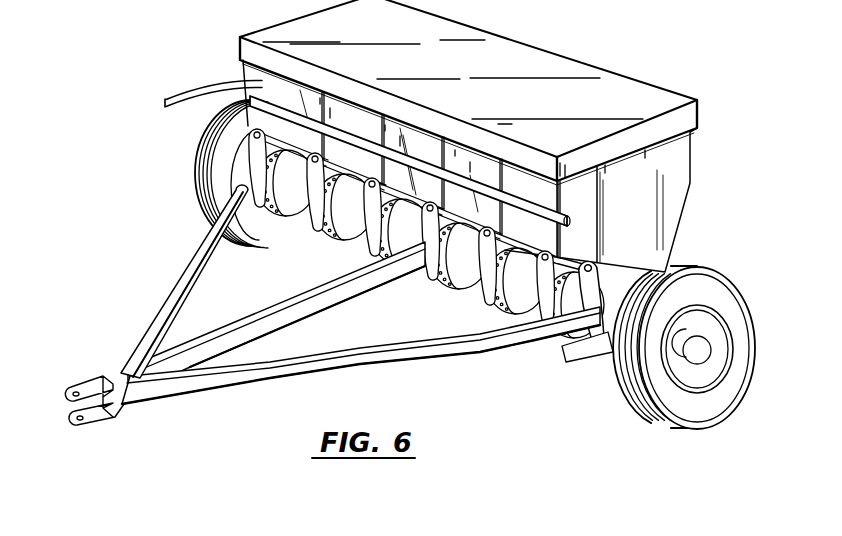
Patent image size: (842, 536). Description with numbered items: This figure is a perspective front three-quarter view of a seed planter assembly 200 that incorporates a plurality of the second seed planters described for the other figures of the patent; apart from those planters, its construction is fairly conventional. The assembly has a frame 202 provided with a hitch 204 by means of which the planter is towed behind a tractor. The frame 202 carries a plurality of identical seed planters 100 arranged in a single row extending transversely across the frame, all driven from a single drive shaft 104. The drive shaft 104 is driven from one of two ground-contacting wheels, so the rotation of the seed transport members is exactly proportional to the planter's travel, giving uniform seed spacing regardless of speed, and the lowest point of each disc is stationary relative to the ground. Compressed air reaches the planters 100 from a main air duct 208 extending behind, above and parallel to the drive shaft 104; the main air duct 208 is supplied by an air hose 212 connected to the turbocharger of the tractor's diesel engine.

The seed planter 100 is at (466, 292).
The drive shaft 104 is at (335, 250).
The seed planter assembly 200 is at (545, 41).
The frame 202 is at (676, 208).
The hitch 204 is at (160, 318).
The main air duct 208 is at (242, 80).
The air hose 212 is at (182, 94).